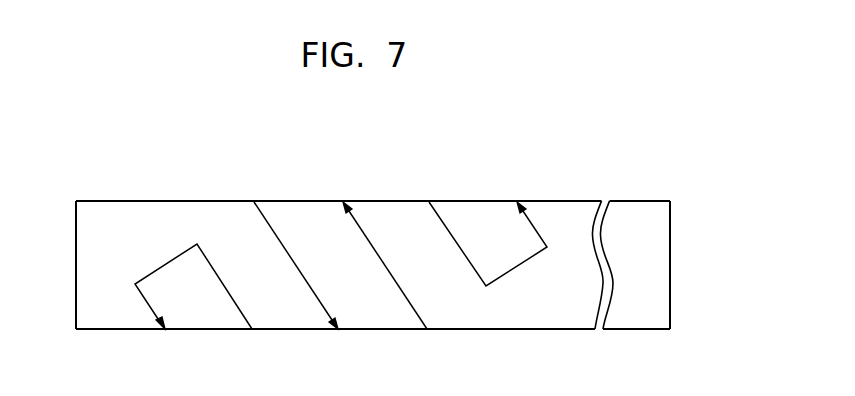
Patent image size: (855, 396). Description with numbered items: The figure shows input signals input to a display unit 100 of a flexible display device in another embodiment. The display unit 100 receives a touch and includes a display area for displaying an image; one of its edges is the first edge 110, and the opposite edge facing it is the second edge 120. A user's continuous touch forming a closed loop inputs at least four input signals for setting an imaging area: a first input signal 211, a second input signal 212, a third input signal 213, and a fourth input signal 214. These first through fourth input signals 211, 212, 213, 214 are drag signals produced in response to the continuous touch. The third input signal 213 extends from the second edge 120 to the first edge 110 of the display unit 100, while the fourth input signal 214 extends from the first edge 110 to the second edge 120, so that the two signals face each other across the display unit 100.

The display unit 100 is at (611, 171).
The first edge 110 is at (98, 329).
The second edge 120 is at (98, 201).
The first input signal 211 is at (224, 283).
The second input signal 212 is at (532, 222).
The third input signal 213 is at (297, 257).
The fourth input signal 214 is at (379, 251).